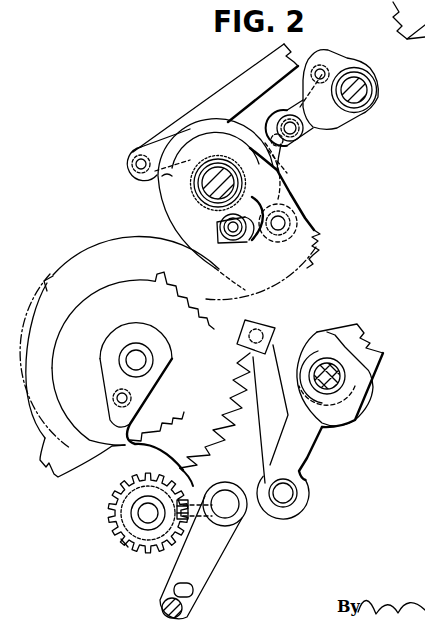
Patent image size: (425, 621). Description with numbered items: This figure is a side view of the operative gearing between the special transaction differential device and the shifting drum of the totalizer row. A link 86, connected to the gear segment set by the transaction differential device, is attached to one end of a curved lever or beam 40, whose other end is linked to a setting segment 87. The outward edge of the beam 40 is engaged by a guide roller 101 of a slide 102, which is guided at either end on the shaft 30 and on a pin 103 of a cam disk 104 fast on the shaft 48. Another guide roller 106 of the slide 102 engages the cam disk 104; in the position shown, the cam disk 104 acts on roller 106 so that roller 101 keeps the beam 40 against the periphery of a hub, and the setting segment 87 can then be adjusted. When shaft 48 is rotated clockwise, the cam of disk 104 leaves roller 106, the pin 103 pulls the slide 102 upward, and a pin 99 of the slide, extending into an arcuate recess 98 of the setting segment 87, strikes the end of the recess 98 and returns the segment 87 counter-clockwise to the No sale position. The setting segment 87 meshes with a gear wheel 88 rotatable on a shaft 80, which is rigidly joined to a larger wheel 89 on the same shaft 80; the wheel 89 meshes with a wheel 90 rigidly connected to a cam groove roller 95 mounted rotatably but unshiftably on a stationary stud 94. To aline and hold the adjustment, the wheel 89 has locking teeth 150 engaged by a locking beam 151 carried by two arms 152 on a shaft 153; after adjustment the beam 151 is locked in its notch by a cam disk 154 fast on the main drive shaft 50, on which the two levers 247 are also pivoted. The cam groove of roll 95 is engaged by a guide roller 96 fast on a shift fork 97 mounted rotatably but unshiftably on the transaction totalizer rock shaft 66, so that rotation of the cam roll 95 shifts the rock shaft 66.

The shaft 30 is at (208, 190).
The curved lever or beam 40 is at (157, 146).
The shaft 48 is at (368, 89).
The main drive shaft 50 is at (332, 377).
The transaction totalizer rock shaft 66 is at (231, 511).
The shaft 80 is at (128, 356).
The link 86 is at (211, 102).
The setting segment 87 is at (317, 233).
The gear wheel 88 is at (119, 287).
The wheel 89 is at (45, 282).
The wheel 90 is at (110, 524).
The stationary stud 94 is at (146, 511).
The cam groove roller 95 is at (126, 540).
The guide roller 96 is at (188, 528).
The shift fork 97 is at (189, 483).
The arcuate recess 98 is at (254, 199).
The pin 99 is at (238, 238).
The guide roller 101 is at (288, 170).
The slide 102 is at (303, 147).
The pin 103 is at (331, 58).
The cam disk 104 is at (363, 117).
The guide roller 106 is at (303, 131).
The locking teeth 150 is at (214, 432).
The locking beam 151 is at (274, 325).
The arms 152 is at (302, 450).
The shaft 153 is at (290, 492).
The cam disk 154 is at (364, 400).
The levers 247 is at (365, 342).